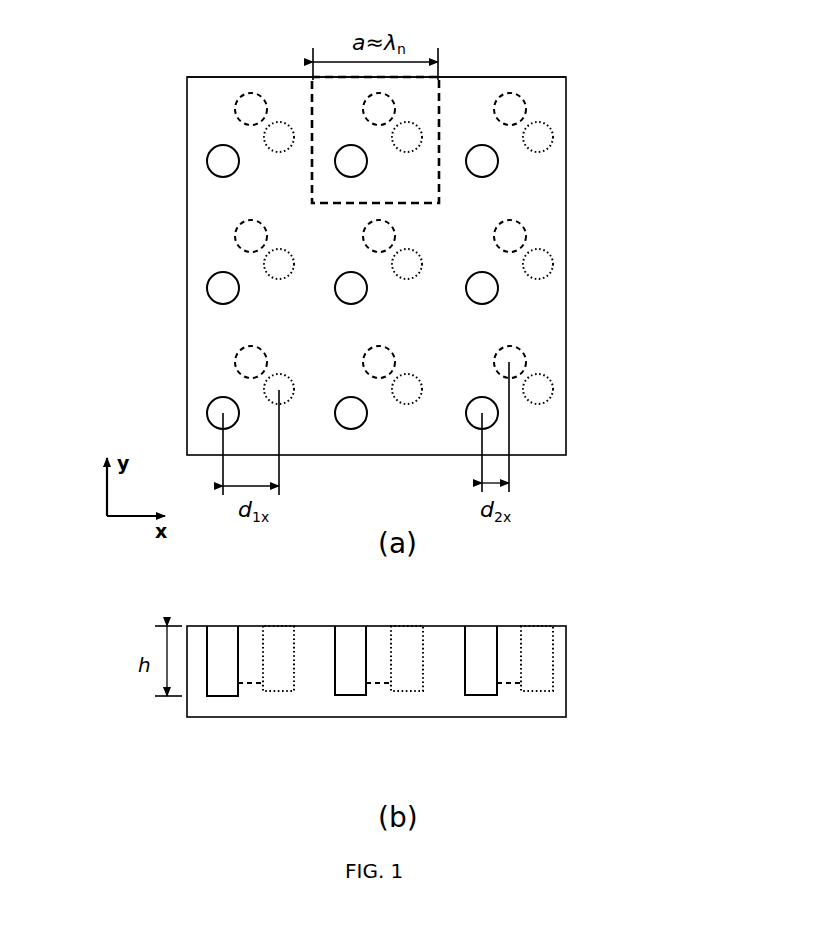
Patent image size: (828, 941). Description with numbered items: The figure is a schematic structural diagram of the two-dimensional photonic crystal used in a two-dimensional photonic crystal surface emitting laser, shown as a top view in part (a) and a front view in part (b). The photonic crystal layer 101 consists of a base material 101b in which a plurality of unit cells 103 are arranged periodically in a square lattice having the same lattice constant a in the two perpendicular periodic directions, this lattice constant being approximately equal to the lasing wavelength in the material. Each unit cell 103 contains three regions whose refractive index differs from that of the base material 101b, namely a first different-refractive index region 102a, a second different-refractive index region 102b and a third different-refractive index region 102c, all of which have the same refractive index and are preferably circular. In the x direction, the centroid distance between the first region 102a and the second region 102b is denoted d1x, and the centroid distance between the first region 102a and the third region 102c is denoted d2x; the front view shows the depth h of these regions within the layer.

The photonic crystal layer 101 is at (204, 220).
The base material 101b is at (544, 176).
The first different-refractive index region 102a is at (487, 291).
The second different-refractive index region 102b is at (540, 265).
The third different-refractive index region 102c is at (515, 233).
The unit cell 103 is at (442, 97).